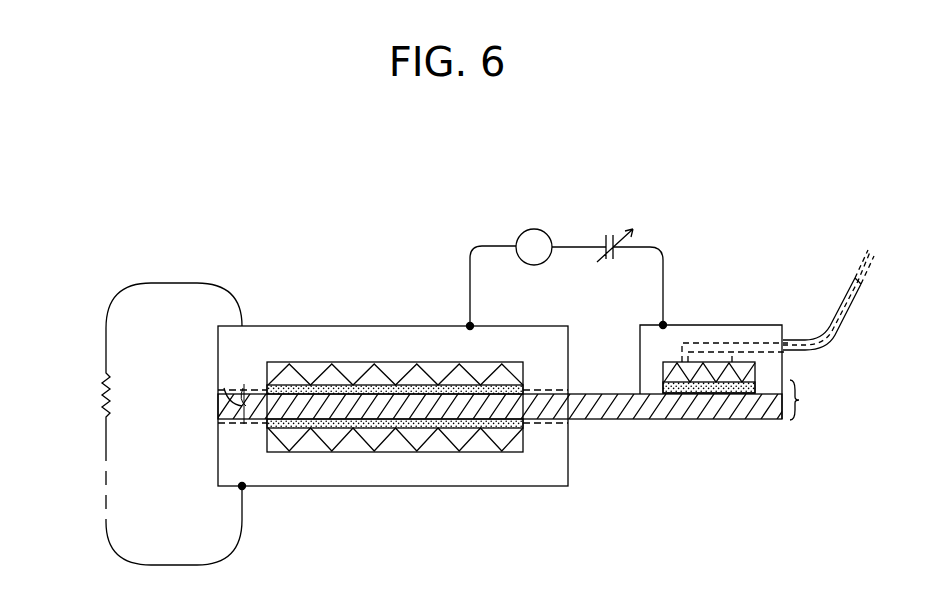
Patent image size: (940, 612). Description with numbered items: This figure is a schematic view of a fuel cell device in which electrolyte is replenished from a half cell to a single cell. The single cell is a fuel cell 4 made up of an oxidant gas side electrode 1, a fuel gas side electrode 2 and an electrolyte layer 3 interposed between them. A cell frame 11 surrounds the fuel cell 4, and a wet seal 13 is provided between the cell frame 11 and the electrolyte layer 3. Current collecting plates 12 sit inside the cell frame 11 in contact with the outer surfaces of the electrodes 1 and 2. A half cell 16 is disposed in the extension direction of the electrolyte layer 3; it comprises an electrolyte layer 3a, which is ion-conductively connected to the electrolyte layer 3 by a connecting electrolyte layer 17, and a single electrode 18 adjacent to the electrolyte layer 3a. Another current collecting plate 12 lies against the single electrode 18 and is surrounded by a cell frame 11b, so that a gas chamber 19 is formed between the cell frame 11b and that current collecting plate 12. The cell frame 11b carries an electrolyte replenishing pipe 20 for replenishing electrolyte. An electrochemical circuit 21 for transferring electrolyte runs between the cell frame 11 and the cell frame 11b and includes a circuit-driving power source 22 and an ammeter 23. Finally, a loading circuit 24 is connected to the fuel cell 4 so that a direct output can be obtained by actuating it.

The oxidant gas side electrode 1 is at (327, 386).
The fuel gas side electrode 2 is at (325, 450).
The electrolyte layer 3 is at (387, 410).
The electrolyte layer 3a is at (733, 405).
The fuel cell 4 is at (224, 388).
The cell frame 11 is at (417, 338).
The cell frame 11b is at (638, 343).
The current collecting plate 12 is at (673, 362).
The wet seal 13 is at (553, 390).
The half cell 16 is at (803, 412).
The connecting electrolyte layer 17 is at (608, 405).
The single electrode 18 is at (760, 387).
The gas chamber 19 is at (715, 370).
The electrolyte replenishing pipe 20 is at (860, 280).
The electrochemical circuit 21 is at (480, 246).
The circuit-driving power source 22 is at (607, 235).
The ammeter 23 is at (534, 229).
The loading circuit 24 is at (163, 282).